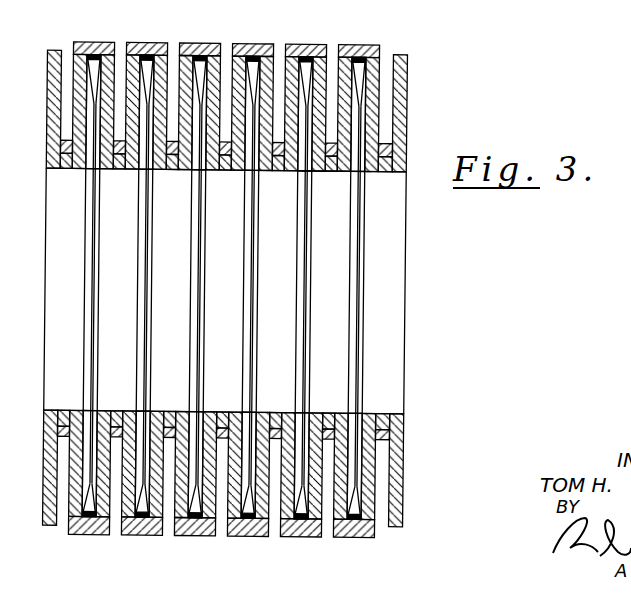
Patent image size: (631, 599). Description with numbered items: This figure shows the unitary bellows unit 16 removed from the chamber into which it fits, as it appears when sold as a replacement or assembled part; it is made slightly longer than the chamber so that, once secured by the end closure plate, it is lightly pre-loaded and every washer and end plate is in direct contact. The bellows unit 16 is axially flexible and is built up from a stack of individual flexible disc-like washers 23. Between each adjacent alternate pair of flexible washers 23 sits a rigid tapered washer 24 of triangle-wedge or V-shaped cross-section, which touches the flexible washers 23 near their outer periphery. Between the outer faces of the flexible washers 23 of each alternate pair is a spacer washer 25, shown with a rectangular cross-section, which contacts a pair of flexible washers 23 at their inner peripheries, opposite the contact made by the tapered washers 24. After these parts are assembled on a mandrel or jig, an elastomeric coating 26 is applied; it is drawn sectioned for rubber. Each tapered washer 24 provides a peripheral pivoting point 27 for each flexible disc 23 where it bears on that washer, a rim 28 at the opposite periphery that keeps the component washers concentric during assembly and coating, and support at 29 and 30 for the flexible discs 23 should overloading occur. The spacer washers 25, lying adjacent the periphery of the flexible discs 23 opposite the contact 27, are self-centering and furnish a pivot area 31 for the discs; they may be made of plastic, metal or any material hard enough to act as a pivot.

The bellows unit 16 is at (408, 148).
The flexible disc-like washer 23 is at (51, 49).
The tapered washer 24 is at (158, 43).
The spacer washer 25 is at (333, 174).
The elastomeric coating 26 is at (238, 43).
The peripheral pivoting point 27 is at (357, 538).
The rim 28 is at (362, 414).
The support 29 is at (375, 440).
The support 30 is at (362, 478).
The pivot area 31 is at (322, 414).